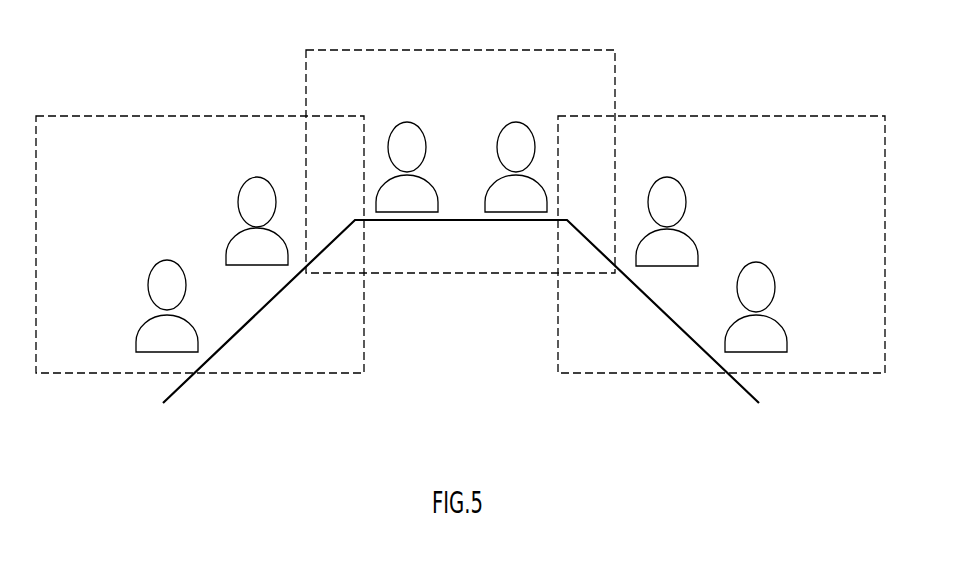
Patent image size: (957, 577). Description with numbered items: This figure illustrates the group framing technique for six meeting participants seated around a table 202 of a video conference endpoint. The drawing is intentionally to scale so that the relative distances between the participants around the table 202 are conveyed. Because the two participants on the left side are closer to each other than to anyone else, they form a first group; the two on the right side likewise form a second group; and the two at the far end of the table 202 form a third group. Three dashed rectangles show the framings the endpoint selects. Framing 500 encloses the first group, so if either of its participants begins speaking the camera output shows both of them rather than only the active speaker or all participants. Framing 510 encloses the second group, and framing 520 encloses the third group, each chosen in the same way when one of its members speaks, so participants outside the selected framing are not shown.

The table 202 is at (471, 320).
The framing 500 is at (110, 373).
The framing 510 is at (812, 373).
The framing 520 is at (547, 50).